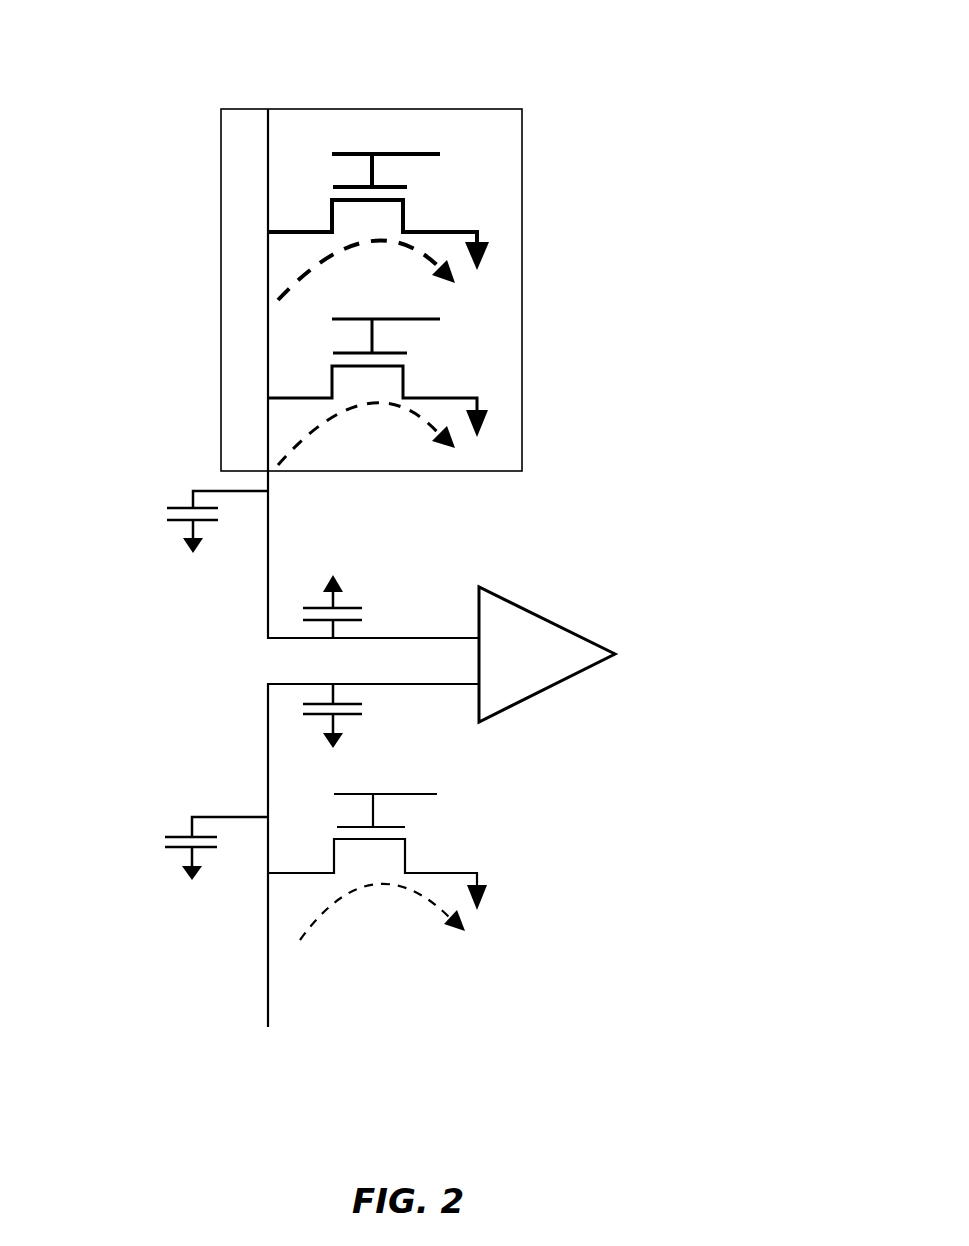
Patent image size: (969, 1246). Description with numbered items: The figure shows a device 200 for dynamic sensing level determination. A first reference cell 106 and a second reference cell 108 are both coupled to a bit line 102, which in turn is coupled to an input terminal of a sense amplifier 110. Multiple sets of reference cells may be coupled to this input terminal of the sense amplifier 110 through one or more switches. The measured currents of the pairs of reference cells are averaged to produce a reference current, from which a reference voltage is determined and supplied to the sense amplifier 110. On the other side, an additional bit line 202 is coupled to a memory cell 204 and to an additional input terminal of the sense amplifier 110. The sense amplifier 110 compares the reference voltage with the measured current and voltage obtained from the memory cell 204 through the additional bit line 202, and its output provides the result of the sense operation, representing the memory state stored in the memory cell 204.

The device 200 is at (745, 33).
The bit line 102 is at (277, 153).
The first reference cell 106 is at (455, 199).
The second reference cell 108 is at (445, 378).
The sense amplifier 110 is at (525, 605).
The additional bit line 202 is at (260, 920).
The memory cell 204 is at (483, 858).